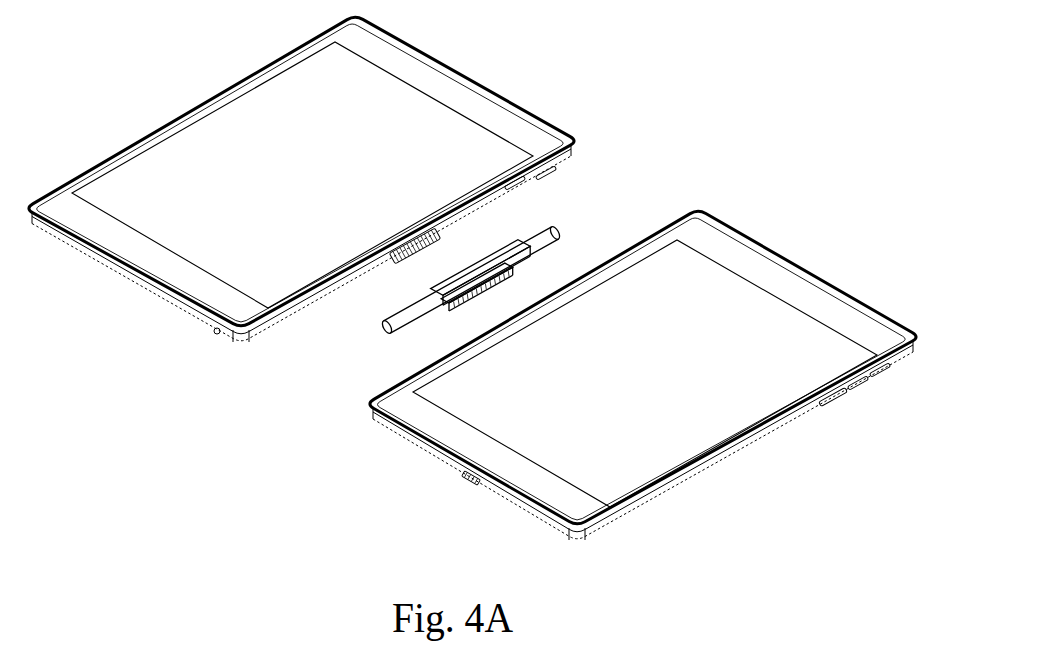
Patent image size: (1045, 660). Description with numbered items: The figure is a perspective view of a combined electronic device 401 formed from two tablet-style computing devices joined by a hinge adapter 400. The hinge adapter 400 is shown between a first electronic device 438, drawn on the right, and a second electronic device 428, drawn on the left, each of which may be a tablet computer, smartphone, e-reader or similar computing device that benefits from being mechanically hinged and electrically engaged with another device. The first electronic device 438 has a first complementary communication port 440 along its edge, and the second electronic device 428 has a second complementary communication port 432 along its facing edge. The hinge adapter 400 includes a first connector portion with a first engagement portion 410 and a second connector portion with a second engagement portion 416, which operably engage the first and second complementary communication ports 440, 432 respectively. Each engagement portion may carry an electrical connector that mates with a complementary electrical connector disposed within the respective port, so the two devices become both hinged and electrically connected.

The hinge adapter 400 is at (352, 337).
The combined electronic device 401 is at (759, 84).
The first engagement portion 410 is at (500, 291).
The second engagement portion 416 is at (477, 264).
The second electronic device 428 is at (133, 129).
The second complementary communication port 432 is at (451, 267).
The first electronic device 438 is at (771, 237).
The first complementary communication port 440 is at (492, 322).